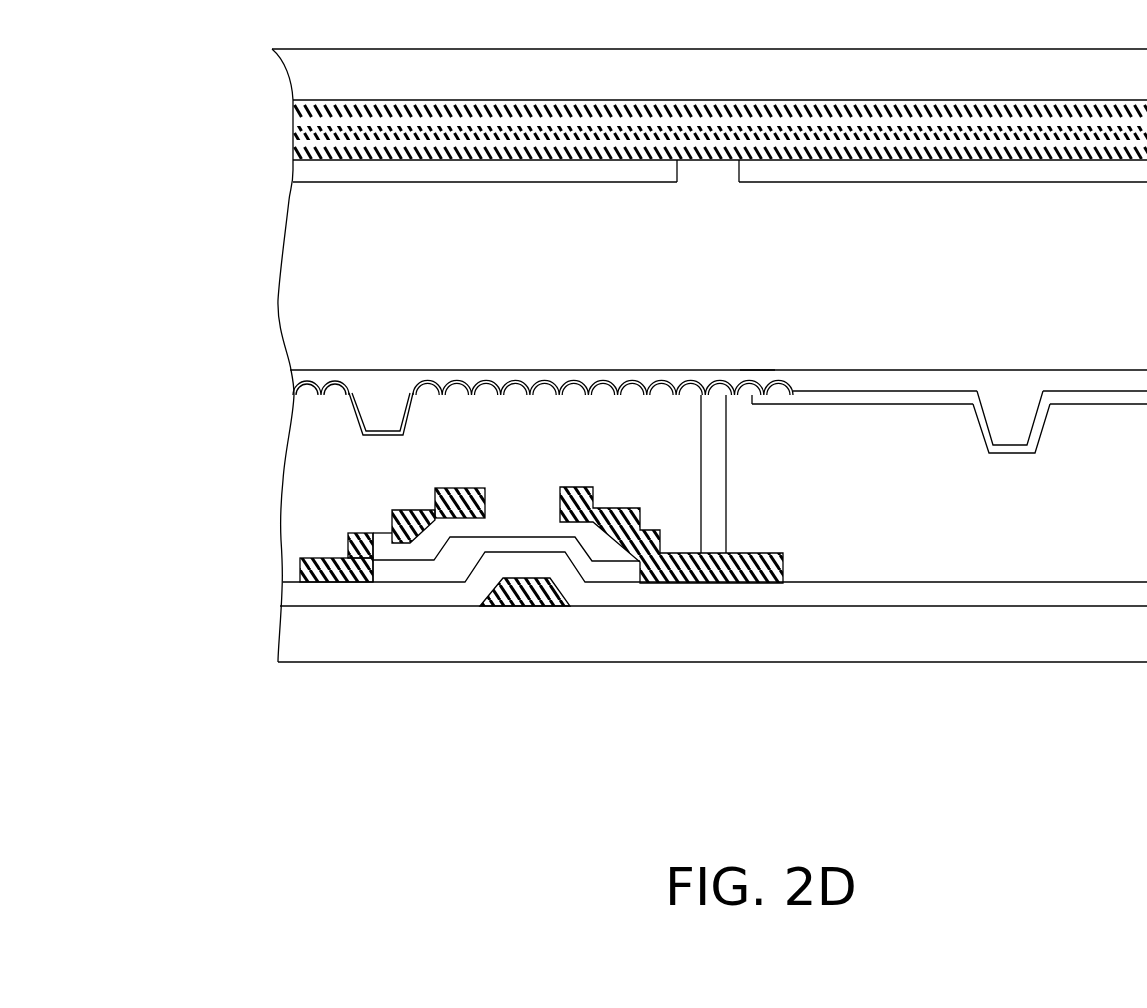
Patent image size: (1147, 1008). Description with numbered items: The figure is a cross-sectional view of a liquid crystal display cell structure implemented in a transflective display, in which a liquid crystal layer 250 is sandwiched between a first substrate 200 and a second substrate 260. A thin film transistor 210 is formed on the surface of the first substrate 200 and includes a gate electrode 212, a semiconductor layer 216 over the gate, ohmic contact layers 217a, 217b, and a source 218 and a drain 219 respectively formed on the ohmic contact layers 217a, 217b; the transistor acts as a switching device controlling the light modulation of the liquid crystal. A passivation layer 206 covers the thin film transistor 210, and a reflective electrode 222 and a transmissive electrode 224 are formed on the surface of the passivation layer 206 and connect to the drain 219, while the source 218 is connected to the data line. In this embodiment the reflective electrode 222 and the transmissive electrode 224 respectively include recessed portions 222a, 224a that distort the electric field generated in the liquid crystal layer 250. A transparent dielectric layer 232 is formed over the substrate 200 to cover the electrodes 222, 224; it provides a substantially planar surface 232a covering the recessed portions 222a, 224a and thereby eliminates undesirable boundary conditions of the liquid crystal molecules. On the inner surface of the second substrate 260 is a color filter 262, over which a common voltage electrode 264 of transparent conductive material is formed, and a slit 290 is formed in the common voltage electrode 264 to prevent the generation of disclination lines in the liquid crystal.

The first substrate 200 is at (285, 637).
The passivation layer 206 is at (292, 480).
The thin film transistor 210 is at (782, 747).
The gate electrode 212 is at (528, 606).
The semiconductor layer 216 is at (520, 548).
The ohmic contact layer 217a is at (484, 530).
The ohmic contact layer 217b is at (564, 530).
The source 218 is at (310, 573).
The drain 219 is at (702, 583).
The reflective electrode 222 is at (575, 382).
The recessed portion 222a is at (383, 408).
The transmissive electrode 224 is at (855, 397).
The recessed portion 224a is at (1010, 410).
The transparent dielectric layer 232 is at (290, 373).
The substantially planar surface 232a is at (758, 367).
The liquid crystal layer 250 is at (305, 240).
The second substrate 260 is at (305, 80).
The color filter 262 is at (297, 128).
The common voltage electrode 264 is at (300, 176).
The slit 290 is at (708, 183).